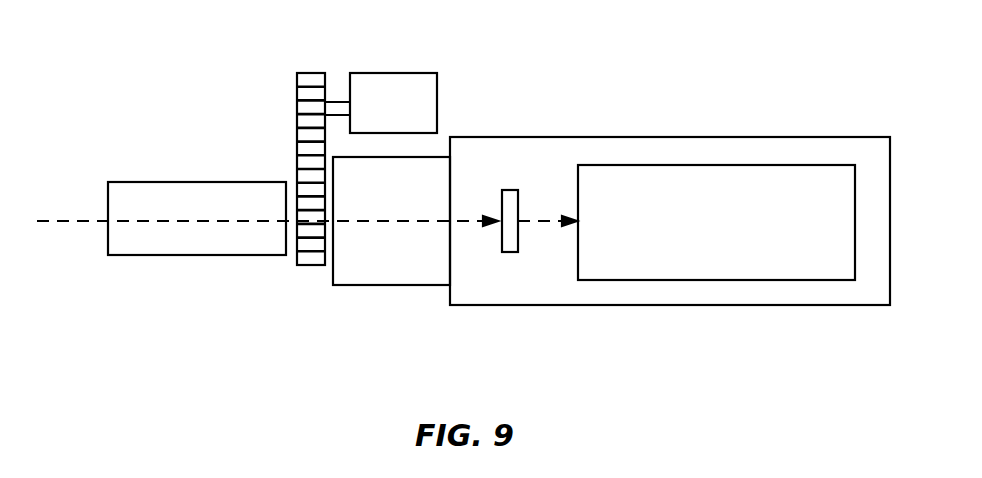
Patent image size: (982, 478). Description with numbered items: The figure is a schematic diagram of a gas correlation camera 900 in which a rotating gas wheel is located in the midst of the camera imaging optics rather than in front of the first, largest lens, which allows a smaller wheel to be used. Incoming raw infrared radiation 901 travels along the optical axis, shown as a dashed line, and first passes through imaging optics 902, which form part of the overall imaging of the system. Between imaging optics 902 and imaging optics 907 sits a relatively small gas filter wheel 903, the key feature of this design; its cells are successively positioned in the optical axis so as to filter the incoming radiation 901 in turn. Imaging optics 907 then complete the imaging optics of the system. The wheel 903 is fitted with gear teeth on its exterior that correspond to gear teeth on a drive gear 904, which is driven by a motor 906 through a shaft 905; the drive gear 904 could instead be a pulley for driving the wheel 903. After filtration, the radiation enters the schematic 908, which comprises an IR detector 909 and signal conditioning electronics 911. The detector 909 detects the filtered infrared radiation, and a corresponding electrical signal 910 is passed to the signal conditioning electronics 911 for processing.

The gas correlation camera 900 is at (743, 63).
The incoming raw infrared radiation 901 is at (40, 221).
The imaging optics 902 is at (197, 243).
The gas filter wheel 903 is at (311, 264).
The drive gear 904 is at (296, 118).
The shaft 905 is at (341, 101).
The motor 906 is at (410, 82).
The imaging optics 907 is at (403, 274).
The schematic 908 is at (553, 292).
The IR detector 909 is at (511, 198).
The electrical signal 910 is at (546, 221).
The signal conditioning electronics 911 is at (804, 178).